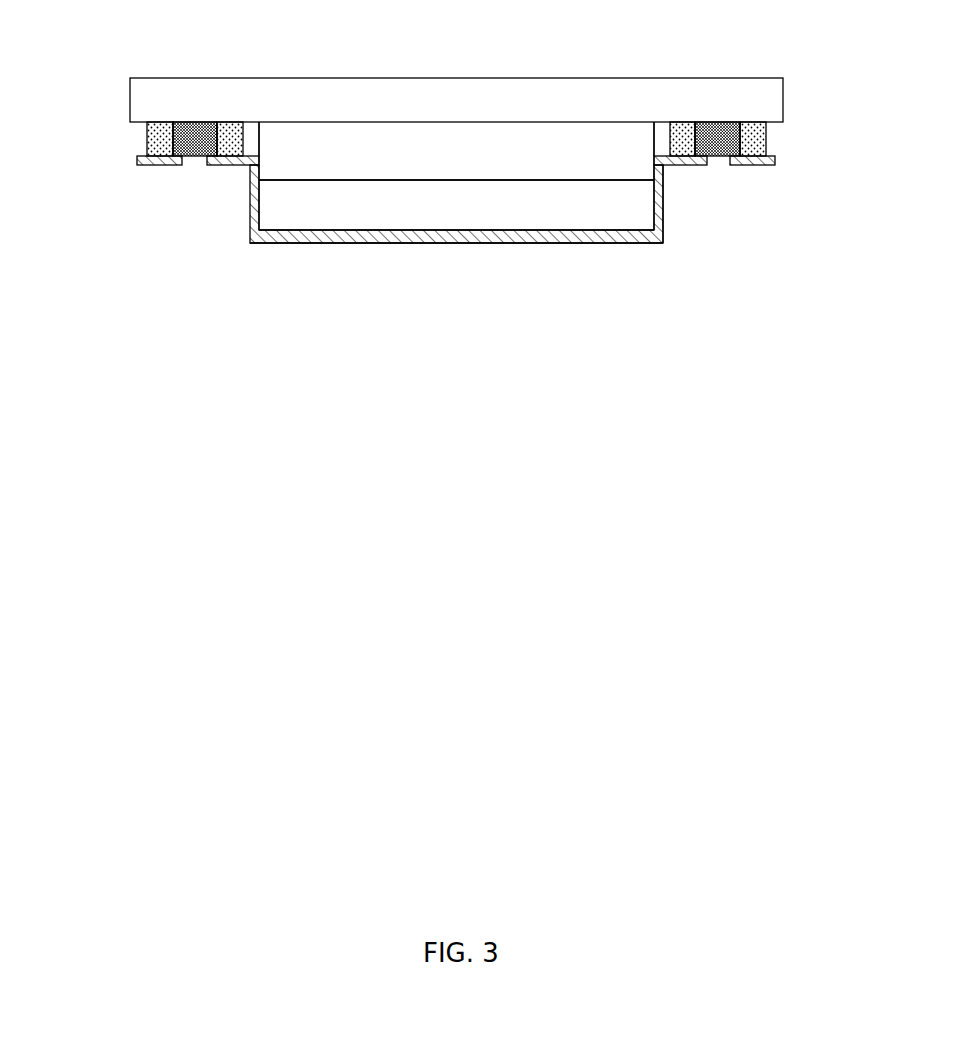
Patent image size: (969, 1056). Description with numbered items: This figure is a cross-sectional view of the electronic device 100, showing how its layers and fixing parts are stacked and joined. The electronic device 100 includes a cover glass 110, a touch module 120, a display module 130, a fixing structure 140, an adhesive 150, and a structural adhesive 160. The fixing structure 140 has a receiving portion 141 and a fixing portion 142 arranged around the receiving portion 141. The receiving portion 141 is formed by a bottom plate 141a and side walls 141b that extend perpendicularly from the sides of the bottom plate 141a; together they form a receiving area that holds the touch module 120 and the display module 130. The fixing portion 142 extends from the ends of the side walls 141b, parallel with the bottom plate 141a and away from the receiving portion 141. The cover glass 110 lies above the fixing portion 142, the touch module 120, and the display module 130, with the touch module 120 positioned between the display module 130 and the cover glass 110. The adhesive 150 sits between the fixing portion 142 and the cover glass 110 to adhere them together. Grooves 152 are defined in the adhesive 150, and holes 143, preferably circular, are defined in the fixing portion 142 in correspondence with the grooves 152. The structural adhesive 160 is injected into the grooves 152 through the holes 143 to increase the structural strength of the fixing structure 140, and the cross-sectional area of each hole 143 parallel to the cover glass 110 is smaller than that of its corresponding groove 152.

The electronic device 100 is at (229, 408).
The cover glass 110 is at (784, 101).
The touch module 120 is at (547, 145).
The display module 130 is at (547, 204).
The fixing structure 140 is at (459, 296).
The receiving portion 141 is at (493, 248).
The bottom plate 141a is at (627, 244).
The side walls 141b is at (665, 215).
The fixing portion 142 is at (225, 166).
The holes 143 is at (188, 176).
The adhesive 150 is at (147, 143).
The grooves 152 is at (188, 130).
The structural adhesive 160 is at (208, 135).